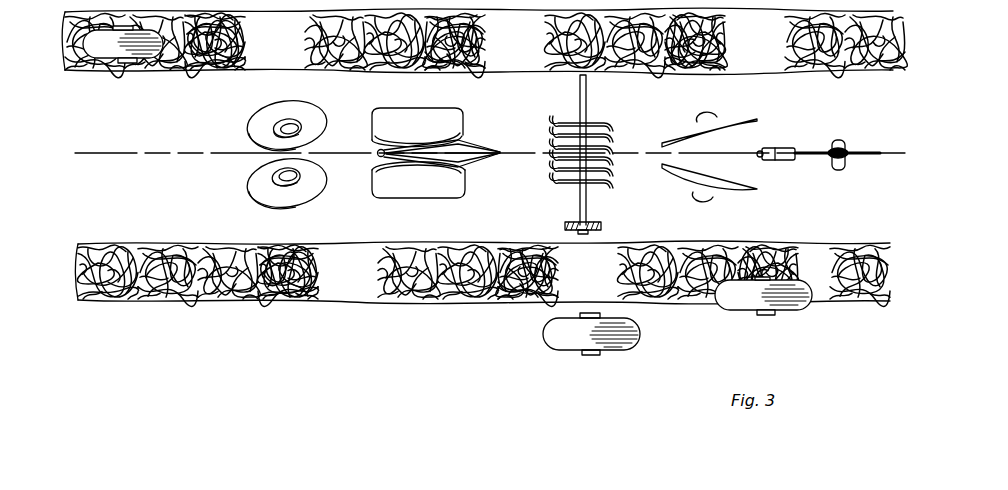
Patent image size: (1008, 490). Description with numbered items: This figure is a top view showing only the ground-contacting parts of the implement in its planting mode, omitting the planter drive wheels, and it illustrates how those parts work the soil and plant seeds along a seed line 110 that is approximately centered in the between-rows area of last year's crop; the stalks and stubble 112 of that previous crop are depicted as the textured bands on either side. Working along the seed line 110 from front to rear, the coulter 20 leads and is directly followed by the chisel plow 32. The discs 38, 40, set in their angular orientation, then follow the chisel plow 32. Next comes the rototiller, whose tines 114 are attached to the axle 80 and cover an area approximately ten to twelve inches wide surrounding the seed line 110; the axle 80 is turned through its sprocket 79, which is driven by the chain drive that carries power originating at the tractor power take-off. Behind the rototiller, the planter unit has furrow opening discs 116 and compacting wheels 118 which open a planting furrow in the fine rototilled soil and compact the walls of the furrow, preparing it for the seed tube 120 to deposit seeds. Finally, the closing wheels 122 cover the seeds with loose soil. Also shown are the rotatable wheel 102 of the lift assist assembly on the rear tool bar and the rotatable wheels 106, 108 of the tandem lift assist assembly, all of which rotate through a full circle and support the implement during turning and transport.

The coulter 20 is at (857, 152).
The chisel plow 32 is at (758, 152).
The disc 38 is at (664, 162).
The disc 40 is at (660, 145).
The sprocket 79 is at (601, 228).
The axle 80 is at (587, 91).
The rotatable wheel 102 is at (130, 64).
The rotatable wheel 106 is at (625, 350).
The rotatable wheel 108 is at (766, 316).
The seed line 110 is at (212, 152).
The last year's stalks and stubble 112 is at (770, 70).
The tines 114 is at (612, 155).
The furrow opening discs 116 is at (500, 153).
The compacting wheels 118 is at (442, 115).
The seed tube 120 is at (378, 156).
The closing wheels 122 is at (315, 110).